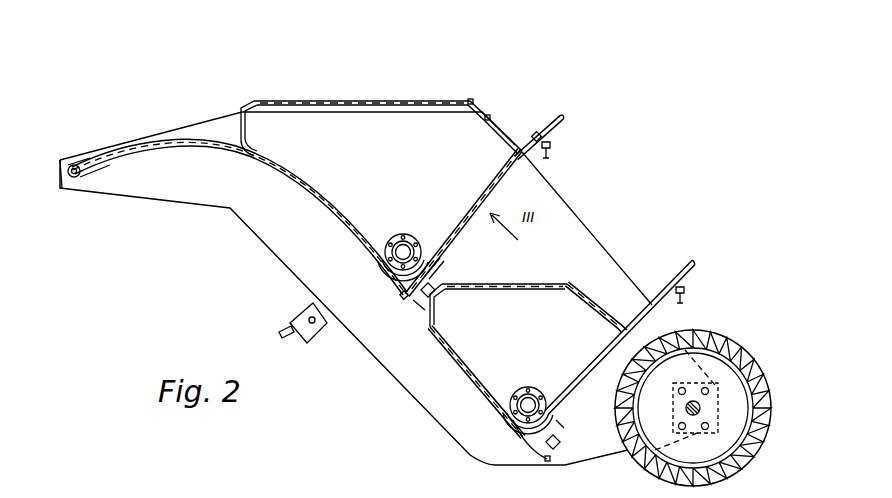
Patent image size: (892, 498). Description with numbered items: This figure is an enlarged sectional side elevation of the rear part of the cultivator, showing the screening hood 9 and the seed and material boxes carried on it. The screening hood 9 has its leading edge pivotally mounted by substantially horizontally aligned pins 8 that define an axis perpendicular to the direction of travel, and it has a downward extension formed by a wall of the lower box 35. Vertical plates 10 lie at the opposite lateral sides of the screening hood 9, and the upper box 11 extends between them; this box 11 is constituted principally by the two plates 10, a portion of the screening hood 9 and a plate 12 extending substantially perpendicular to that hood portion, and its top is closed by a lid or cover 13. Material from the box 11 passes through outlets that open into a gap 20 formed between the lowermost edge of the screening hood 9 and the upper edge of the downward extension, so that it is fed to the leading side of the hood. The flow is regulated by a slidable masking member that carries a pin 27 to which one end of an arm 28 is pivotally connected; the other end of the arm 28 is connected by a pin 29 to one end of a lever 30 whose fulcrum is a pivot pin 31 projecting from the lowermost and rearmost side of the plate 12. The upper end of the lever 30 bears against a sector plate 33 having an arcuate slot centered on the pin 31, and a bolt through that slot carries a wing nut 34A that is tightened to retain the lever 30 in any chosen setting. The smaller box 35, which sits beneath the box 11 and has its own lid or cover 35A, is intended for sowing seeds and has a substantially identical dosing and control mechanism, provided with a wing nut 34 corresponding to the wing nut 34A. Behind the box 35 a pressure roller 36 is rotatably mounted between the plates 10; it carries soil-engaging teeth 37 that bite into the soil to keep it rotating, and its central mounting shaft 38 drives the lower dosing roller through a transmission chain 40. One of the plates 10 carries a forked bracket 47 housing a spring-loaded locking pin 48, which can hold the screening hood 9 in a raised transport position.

The pins 8 is at (77, 166).
The screening hood 9 is at (223, 148).
The vertical plates 10 is at (562, 208).
The box 11 is at (440, 123).
The plate 12 is at (489, 183).
The lid or cover 13 is at (381, 101).
The gap 20 is at (418, 301).
The pin 27 is at (559, 443).
The arm 28 is at (560, 427).
The pin 29 is at (433, 283).
The lever 30 is at (564, 121).
The pivot pin 31 is at (443, 262).
The sector plate 33 is at (535, 133).
The wing nut 34 is at (686, 291).
The wing nut 34A is at (551, 143).
The box 35 is at (573, 317).
The lid or cover 35A is at (556, 268).
The pressure roller 36 is at (696, 398).
The soil-engaging teeth 37 is at (724, 337).
The central mounting shaft 38 is at (685, 407).
The transmission chain 40 is at (406, 227).
The forked bracket 47 is at (303, 318).
The locking pin 48 is at (286, 334).